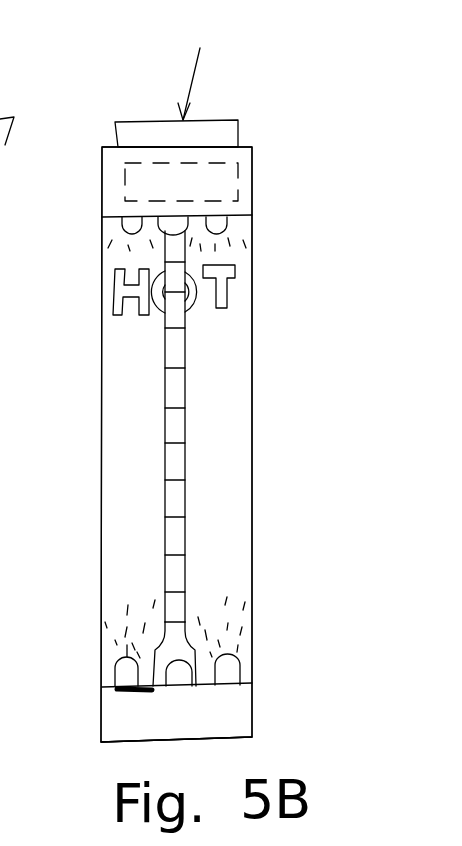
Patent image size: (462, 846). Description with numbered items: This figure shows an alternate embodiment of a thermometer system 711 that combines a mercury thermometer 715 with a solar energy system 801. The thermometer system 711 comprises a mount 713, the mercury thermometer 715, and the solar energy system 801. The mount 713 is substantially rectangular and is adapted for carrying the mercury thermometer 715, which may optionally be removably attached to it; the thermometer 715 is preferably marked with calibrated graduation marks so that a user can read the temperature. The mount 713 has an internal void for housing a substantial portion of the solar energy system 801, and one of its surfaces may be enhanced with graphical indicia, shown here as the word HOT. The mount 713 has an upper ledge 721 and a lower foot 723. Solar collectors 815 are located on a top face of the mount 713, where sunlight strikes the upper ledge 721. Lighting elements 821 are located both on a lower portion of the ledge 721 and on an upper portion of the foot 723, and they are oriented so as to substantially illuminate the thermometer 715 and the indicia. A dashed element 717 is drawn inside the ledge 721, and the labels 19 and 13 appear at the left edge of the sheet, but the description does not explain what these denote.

The thermometer system 711 is at (368, 175).
The mount 713 is at (252, 405).
The mercury thermometer 715 is at (165, 350).
The battery / circuit element 717 is at (239, 164).
The upper ledge 721 is at (93, 153).
The lower foot 723 is at (253, 705).
The solar energy system 801 is at (119, 186).
The solar collectors 815 is at (223, 69).
The lighting elements 821 is at (167, 233).
The indicia HOT 19 is at (130, 322).
The element 13 is at (23, 449).